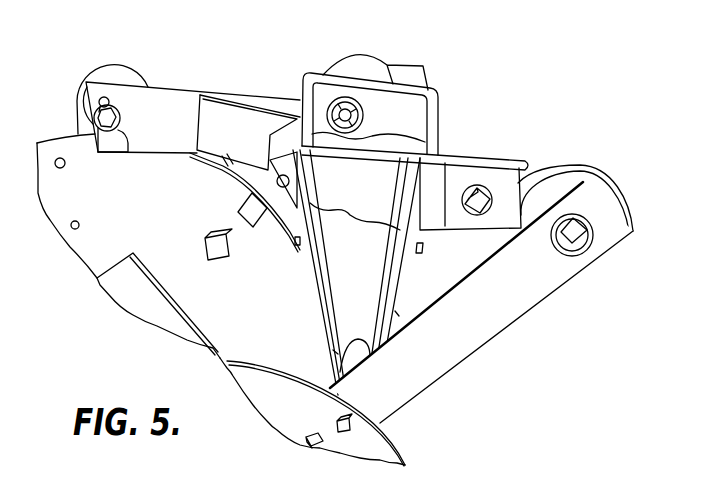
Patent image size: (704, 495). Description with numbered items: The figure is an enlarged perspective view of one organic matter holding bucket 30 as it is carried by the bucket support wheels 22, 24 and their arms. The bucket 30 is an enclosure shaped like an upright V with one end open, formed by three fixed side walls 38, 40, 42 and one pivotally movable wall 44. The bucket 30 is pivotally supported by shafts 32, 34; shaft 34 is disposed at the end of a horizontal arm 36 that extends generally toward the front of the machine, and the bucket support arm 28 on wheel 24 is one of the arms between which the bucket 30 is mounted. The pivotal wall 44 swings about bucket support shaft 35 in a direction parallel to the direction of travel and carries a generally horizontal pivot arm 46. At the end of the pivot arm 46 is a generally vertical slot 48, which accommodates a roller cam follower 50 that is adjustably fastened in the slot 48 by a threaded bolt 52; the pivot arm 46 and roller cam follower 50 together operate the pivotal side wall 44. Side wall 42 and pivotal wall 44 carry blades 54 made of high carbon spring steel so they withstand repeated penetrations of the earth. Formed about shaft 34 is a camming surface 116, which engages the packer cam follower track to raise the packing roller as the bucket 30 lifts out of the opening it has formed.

The bucket support wheel 22 is at (57, 140).
The bucket support wheel 24 is at (398, 444).
The bucket support arm 28 is at (508, 327).
The bucket 30 is at (414, 90).
The shaft 32 is at (342, 105).
The shaft 34 is at (573, 245).
The bucket support shaft 35 is at (277, 180).
The horizontal arm 36 is at (533, 166).
The fixed side wall 38 is at (368, 284).
The fixed side wall 40 is at (406, 125).
The fixed side wall 42 is at (400, 298).
The pivotally movable wall 44 is at (320, 303).
The pivot arm 46 is at (193, 86).
The slot 48 is at (127, 150).
The roller cam follower 50 is at (118, 65).
The threaded bolt 52 is at (100, 127).
The blade 54 is at (335, 352).
The camming surface 116 is at (606, 172).